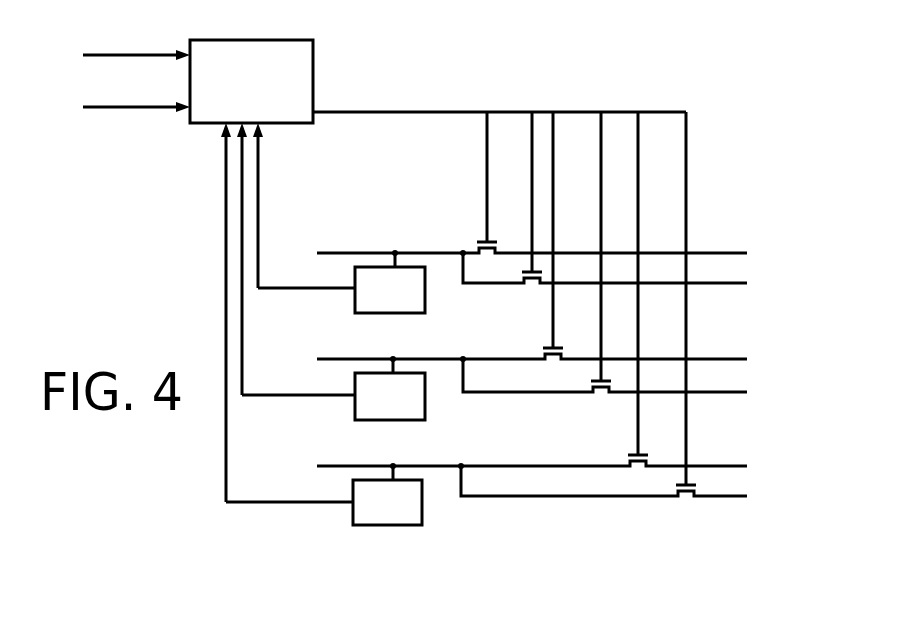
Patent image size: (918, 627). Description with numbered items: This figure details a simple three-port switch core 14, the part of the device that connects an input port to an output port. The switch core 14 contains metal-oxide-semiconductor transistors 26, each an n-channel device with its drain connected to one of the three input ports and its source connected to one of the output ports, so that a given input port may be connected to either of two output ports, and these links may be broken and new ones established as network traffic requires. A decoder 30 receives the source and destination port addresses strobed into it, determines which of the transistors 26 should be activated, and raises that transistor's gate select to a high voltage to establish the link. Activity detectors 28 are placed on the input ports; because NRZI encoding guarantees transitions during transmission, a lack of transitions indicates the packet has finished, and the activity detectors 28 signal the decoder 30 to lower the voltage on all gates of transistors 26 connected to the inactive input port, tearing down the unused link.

The switch core 14 is at (165, 322).
The decoder 30 is at (290, 34).
The metal-oxide-semiconductor (MOS) transistors 26 is at (561, 508).
The activity detectors 28 is at (426, 290).